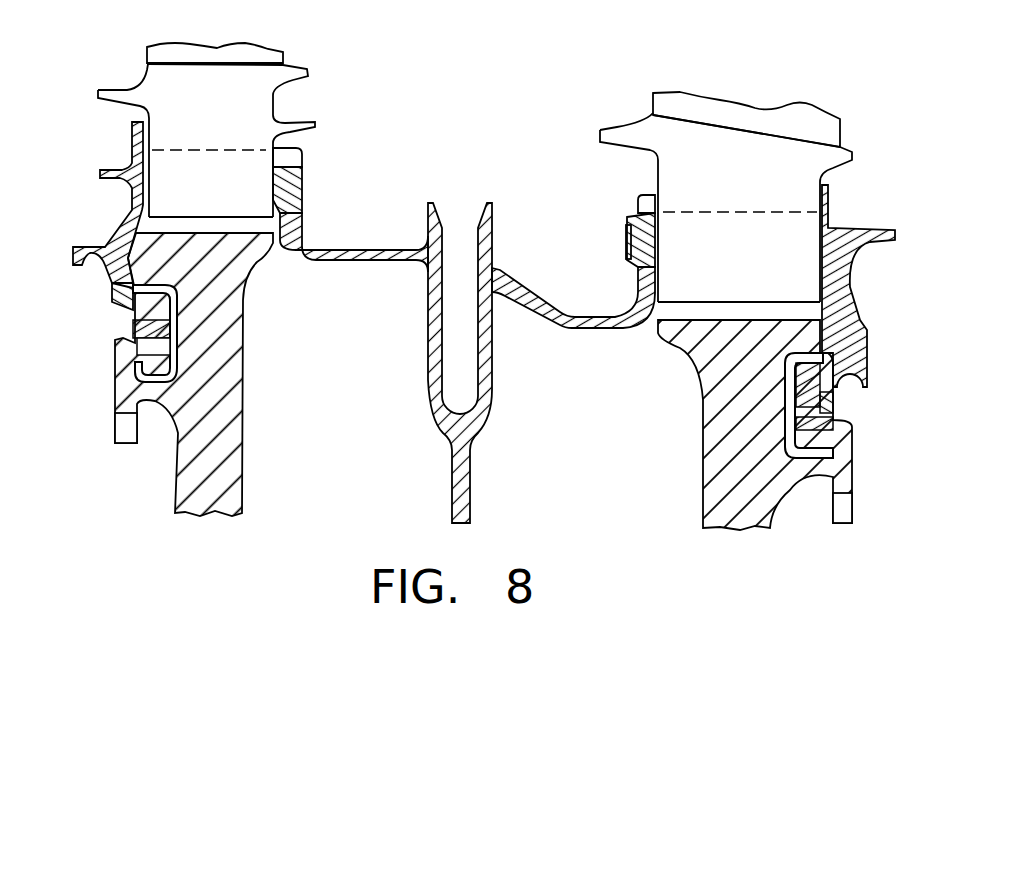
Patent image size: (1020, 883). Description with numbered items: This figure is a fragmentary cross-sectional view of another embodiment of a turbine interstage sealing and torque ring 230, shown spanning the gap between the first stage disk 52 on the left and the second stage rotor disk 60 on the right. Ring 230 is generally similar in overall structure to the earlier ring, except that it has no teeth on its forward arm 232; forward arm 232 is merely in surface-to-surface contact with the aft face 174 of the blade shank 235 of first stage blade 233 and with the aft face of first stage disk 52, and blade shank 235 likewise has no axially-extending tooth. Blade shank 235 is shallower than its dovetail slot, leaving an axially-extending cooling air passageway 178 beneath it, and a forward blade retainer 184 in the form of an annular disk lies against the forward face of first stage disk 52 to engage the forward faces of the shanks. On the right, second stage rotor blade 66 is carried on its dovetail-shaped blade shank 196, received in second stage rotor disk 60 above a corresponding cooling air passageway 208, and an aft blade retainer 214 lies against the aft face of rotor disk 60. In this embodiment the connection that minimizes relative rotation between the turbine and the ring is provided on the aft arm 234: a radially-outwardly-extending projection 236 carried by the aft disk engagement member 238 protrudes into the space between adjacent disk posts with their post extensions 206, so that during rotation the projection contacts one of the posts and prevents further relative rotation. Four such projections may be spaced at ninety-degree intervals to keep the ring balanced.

The first stage disk 52 is at (227, 495).
The second stage rotor disk 60 is at (702, 477).
The second stage rotor blade 66 is at (815, 133).
The aft face 174 is at (260, 153).
The cooling air passageway 178 is at (247, 222).
The forward blade retainer 184 is at (112, 285).
The blade shank 196 is at (775, 185).
The post extension 206 is at (641, 197).
The cooling air passageway 208 is at (702, 310).
The aft blade retainer 214 is at (855, 337).
The interstage sealing and torque ring 230 is at (390, 426).
The forward arm 232 is at (367, 262).
The first stage blade 233 is at (210, 52).
The aft arm 234 is at (587, 330).
The blade shank 235 is at (237, 131).
The radially-outwardly-extending projection 236 is at (627, 228).
The aft disk engagement member 238 is at (628, 262).